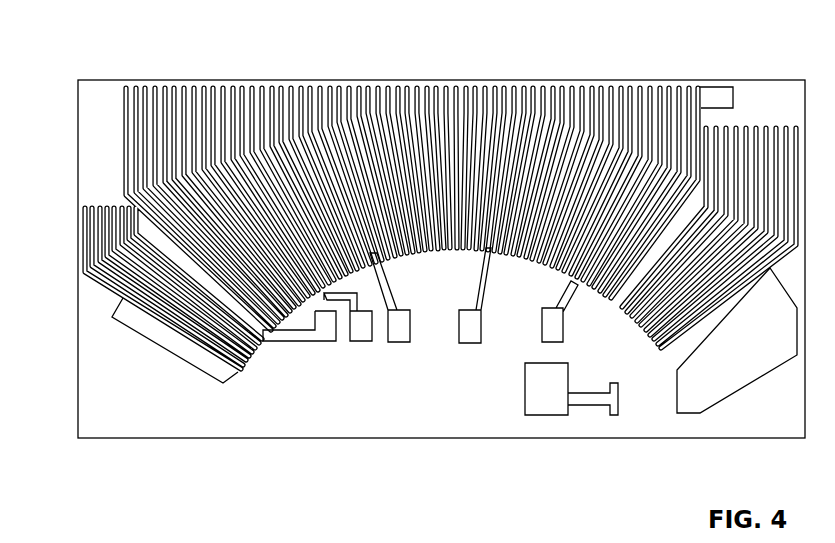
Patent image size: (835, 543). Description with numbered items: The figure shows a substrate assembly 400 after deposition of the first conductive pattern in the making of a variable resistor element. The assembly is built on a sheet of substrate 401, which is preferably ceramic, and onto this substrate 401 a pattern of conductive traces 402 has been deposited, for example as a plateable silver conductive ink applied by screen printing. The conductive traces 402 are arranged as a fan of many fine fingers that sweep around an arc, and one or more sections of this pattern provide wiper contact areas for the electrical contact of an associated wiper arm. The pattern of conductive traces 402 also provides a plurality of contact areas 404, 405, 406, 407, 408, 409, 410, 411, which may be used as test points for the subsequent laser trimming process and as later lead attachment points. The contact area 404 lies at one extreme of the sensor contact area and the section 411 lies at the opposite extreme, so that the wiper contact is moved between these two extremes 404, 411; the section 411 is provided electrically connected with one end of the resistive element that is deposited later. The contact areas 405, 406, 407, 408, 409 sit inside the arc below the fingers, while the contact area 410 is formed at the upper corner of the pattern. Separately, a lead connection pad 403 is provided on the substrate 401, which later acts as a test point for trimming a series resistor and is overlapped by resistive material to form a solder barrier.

The electrode array substrate assembly 400 is at (419, 247).
The substrate 401 is at (383, 379).
The conductive traces 402 is at (172, 238).
The lead connection pad 403 is at (546, 379).
The contact area 404 is at (224, 383).
The contact area 405 is at (328, 325).
The contact area 406 is at (361, 334).
The contact area 407 is at (402, 338).
The contact area 408 is at (466, 336).
The contact area 409 is at (552, 320).
The contact area 410 is at (707, 96).
The contact area 411 is at (712, 392).